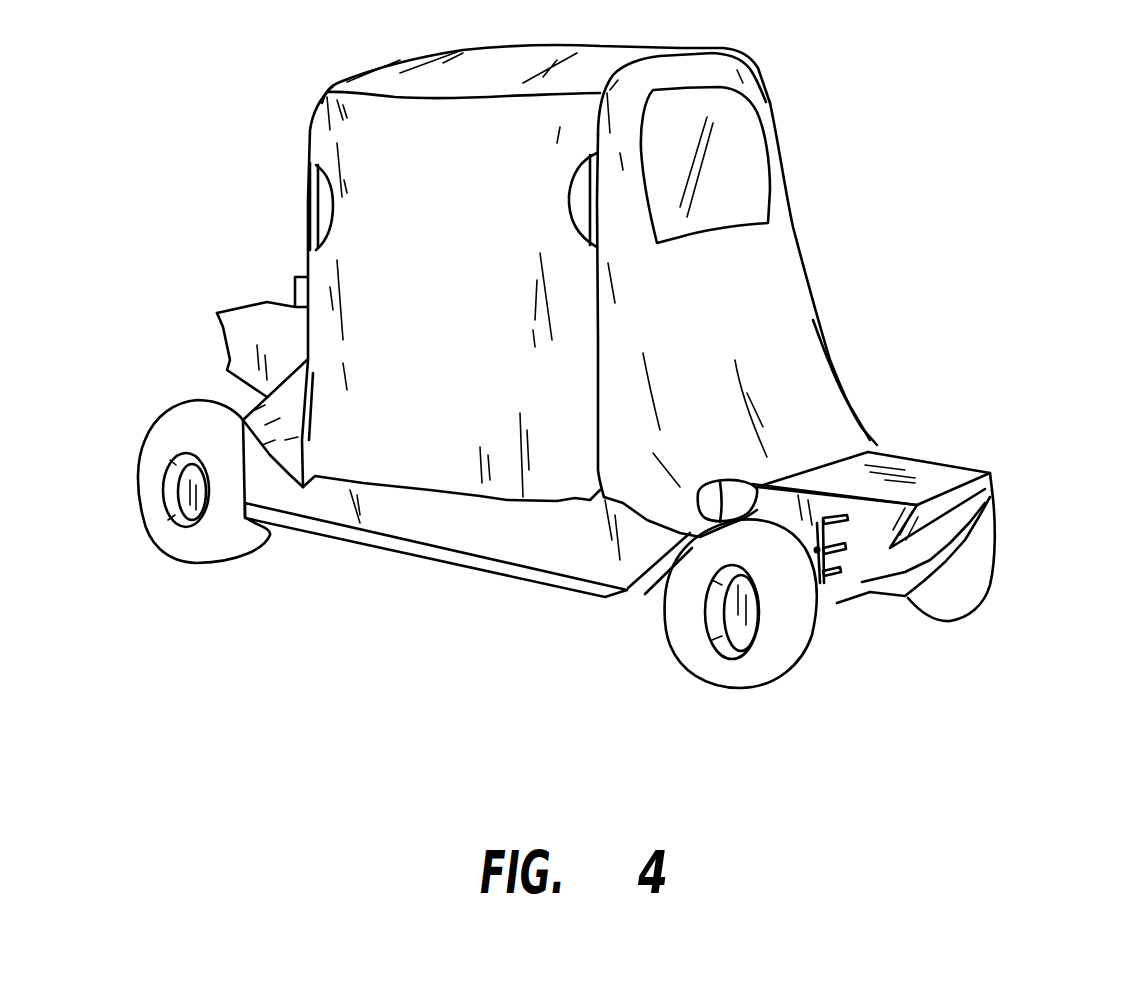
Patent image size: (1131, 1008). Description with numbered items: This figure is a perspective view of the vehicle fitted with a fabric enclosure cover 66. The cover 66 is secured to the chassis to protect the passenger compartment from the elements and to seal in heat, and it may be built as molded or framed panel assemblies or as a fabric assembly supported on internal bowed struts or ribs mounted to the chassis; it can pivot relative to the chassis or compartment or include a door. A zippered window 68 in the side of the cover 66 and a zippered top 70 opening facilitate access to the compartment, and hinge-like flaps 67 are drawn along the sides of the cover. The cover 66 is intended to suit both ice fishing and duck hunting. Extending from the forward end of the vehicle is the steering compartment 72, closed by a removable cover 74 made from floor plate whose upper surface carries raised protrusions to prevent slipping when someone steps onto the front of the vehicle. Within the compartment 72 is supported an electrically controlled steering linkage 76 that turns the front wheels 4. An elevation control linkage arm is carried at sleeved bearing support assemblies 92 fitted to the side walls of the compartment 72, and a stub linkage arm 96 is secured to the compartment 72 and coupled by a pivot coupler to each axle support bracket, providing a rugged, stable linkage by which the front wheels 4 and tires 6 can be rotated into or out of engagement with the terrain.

The front wheel 4 is at (727, 617).
The tire 6 is at (743, 683).
The enclosure cover 66 is at (814, 225).
The hinge flap 67 is at (317, 208).
The zippered window 68 is at (740, 148).
The zippered top opening 70 is at (393, 98).
The steering compartment 72 is at (1006, 487).
The removable cover 74 is at (890, 462).
The electrically controlled steering linkage 76 is at (840, 523).
The sleeved bearing support assembly 92 is at (840, 547).
The stub linkage arm 96 is at (834, 570).